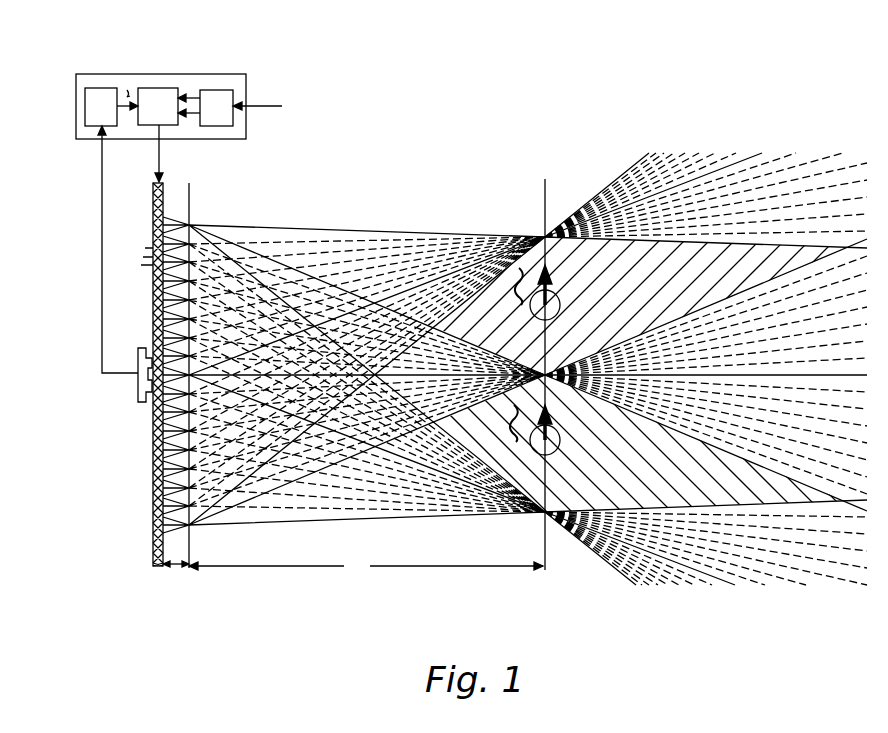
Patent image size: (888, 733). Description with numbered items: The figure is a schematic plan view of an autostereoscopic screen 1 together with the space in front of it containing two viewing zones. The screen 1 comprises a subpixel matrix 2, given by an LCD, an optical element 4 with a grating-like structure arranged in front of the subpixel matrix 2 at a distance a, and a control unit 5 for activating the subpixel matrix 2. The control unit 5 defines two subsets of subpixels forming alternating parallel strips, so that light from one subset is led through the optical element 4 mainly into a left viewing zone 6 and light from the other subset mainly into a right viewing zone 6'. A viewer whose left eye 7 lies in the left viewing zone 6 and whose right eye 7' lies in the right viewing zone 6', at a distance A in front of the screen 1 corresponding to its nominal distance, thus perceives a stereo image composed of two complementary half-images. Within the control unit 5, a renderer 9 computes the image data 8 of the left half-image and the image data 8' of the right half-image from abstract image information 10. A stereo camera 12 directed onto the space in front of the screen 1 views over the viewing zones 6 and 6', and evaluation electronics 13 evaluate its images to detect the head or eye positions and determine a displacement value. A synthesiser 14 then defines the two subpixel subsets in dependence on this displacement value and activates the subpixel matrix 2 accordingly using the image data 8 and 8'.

The screen 1 is at (250, 578).
The subpixel matrix 2 is at (155, 569).
The optical element 4 is at (192, 538).
The control unit 5 is at (192, 73).
The left viewing zone 6 is at (706, 542).
The right viewing zone 6' is at (674, 215).
The left eye 7 is at (546, 430).
The right eye 7' is at (552, 292).
The image data of the left stereoscopic half-image 8 is at (189, 141).
The image data of the right stereoscopic half-image 8' is at (189, 70).
The renderer 9 is at (222, 127).
The abstract image information 10 is at (268, 110).
The stereo camera 12 is at (138, 388).
The evaluation electronics 13 is at (93, 88).
The synthesiser 14 is at (158, 88).
The distance between the subpixel matrix and the optical element a is at (176, 574).
The distance of the eyes in front of the screen A is at (366, 568).